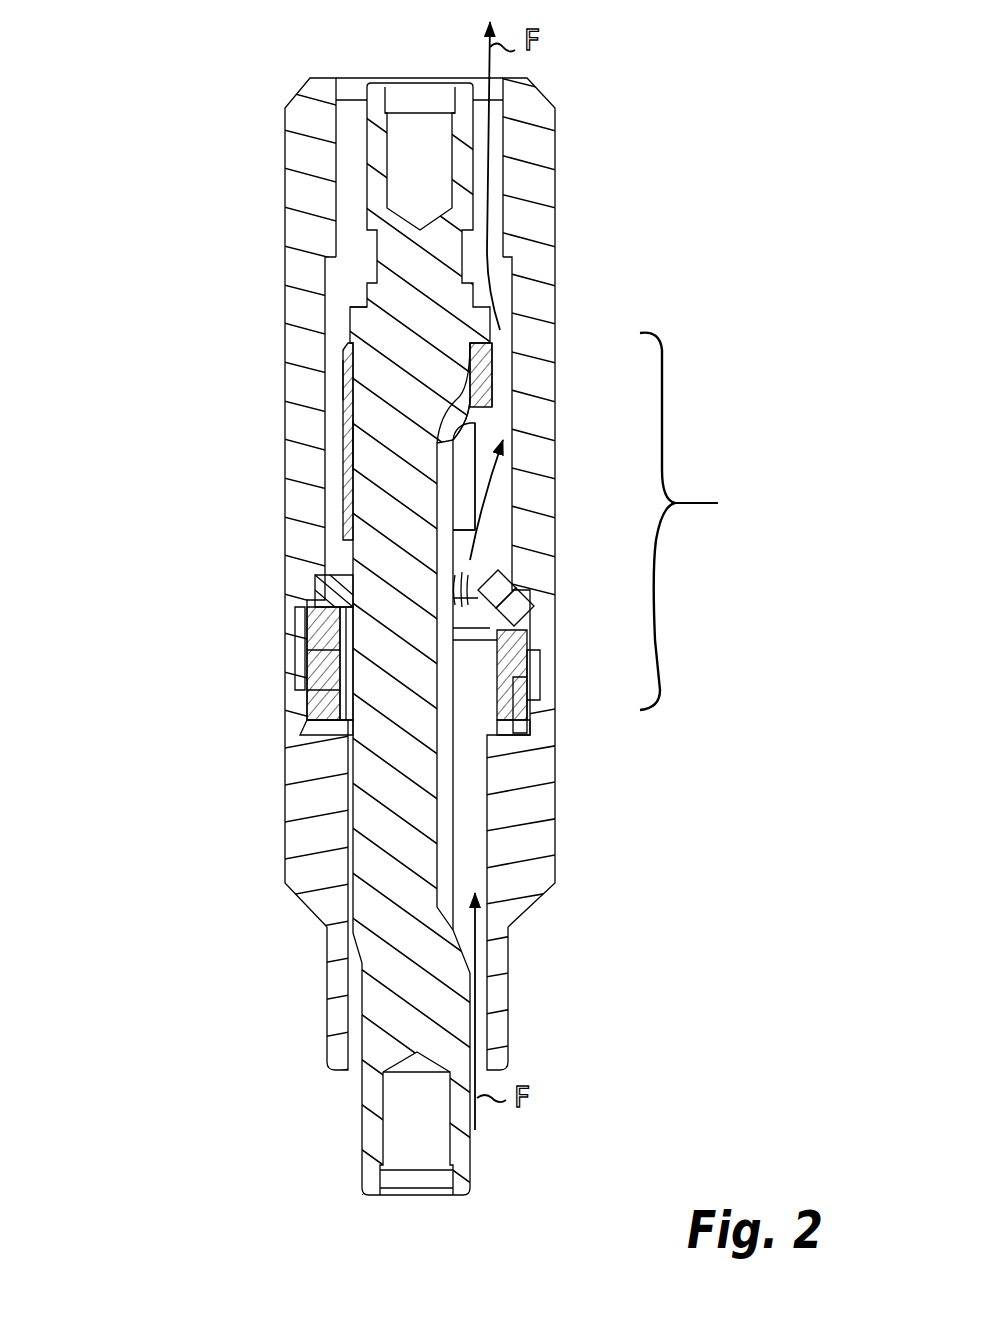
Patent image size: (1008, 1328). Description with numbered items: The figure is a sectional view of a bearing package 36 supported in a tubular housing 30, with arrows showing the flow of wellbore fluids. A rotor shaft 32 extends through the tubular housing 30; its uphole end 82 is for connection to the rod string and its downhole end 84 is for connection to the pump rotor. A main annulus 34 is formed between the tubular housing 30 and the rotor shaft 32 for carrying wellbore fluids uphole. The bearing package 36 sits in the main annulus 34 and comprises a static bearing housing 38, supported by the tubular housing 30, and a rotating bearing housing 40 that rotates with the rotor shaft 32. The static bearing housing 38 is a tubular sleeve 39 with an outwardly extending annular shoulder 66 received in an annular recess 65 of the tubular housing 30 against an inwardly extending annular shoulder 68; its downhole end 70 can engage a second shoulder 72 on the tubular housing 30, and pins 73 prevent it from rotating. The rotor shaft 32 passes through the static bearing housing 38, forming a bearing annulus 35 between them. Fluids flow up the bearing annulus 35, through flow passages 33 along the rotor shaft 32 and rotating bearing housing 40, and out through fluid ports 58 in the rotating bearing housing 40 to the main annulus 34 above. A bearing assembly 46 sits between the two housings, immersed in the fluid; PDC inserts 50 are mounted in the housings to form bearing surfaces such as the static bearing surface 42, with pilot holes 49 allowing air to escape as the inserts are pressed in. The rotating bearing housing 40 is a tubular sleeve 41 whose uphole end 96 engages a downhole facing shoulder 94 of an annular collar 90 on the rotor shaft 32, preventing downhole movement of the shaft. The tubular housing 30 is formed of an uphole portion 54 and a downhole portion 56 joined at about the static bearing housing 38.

The tubular housing 30 is at (618, 272).
The rotor shaft 32 is at (400, 425).
The flow passages 33 is at (480, 481).
The main annulus 34 is at (503, 137).
The bearing annulus 35 is at (470, 810).
The bearing package 36 is at (178, 149).
The static bearing housing 38 is at (262, 647).
The tubular sleeve 39 is at (323, 650).
The rotating bearing housing 40 is at (338, 375).
The tubular sleeve 41 is at (350, 442).
The static bearing surface 42 is at (320, 610).
The bearing assembly 46 is at (700, 521).
The pilot holes 49 is at (490, 580).
The PDC inserts 50 is at (508, 605).
The uphole portion 54 is at (557, 173).
The downhole portion 56 is at (508, 1030).
The fluid ports 58 is at (487, 412).
The annular recess 65 is at (330, 603).
The annular shoulder 66 is at (315, 700).
The annular shoulder 68 is at (313, 673).
The downhole end 70 is at (512, 720).
The second shoulder 72 is at (310, 690).
The pins 73 is at (527, 705).
The uphole end 82 is at (377, 137).
The downhole end 84 is at (367, 1125).
The annular collar 90 is at (347, 323).
The downhole facing shoulder 94 is at (347, 350).
The uphole end 96 is at (503, 327).